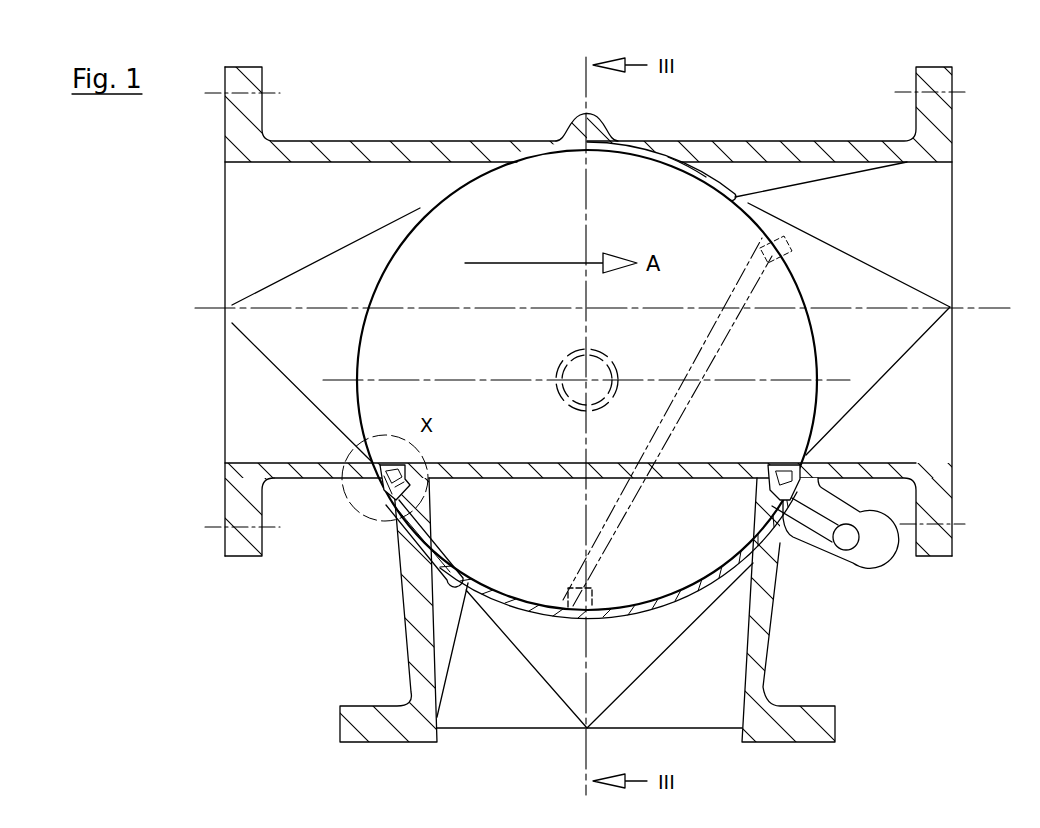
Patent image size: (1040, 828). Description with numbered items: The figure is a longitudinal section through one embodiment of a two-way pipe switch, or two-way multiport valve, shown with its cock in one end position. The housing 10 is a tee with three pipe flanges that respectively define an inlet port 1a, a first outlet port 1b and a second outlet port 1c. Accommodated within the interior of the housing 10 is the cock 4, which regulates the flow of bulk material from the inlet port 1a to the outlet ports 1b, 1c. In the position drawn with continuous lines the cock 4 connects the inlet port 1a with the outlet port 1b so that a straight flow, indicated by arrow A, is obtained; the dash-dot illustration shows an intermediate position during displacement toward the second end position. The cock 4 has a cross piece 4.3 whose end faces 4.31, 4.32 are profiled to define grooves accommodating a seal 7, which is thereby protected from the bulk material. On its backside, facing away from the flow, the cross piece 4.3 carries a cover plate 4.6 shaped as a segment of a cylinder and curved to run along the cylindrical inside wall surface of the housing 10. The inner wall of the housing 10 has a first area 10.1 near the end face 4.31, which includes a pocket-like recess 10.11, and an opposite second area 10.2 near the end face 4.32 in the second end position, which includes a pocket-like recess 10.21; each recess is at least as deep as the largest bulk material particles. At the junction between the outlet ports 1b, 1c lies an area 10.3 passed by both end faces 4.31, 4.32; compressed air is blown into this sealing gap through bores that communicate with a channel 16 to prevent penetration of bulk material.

The inlet port 1a is at (228, 227).
The first outlet port 1b is at (933, 227).
The second outlet port 1c is at (503, 717).
The cock 4 is at (553, 509).
The cross piece 4.3 is at (723, 464).
The end face 4.31 is at (392, 503).
The end face 4.32 is at (800, 462).
The cover plate 4.6 is at (632, 607).
The seal 7 is at (378, 497).
The housing 10 is at (472, 140).
The first area 10.1 is at (427, 523).
The pocket-like recess 10.11 is at (440, 548).
The second area 10.2 is at (647, 166).
The pocket-like recess 10.21 is at (688, 166).
The area 10.3 is at (788, 533).
The channel 16 is at (843, 547).